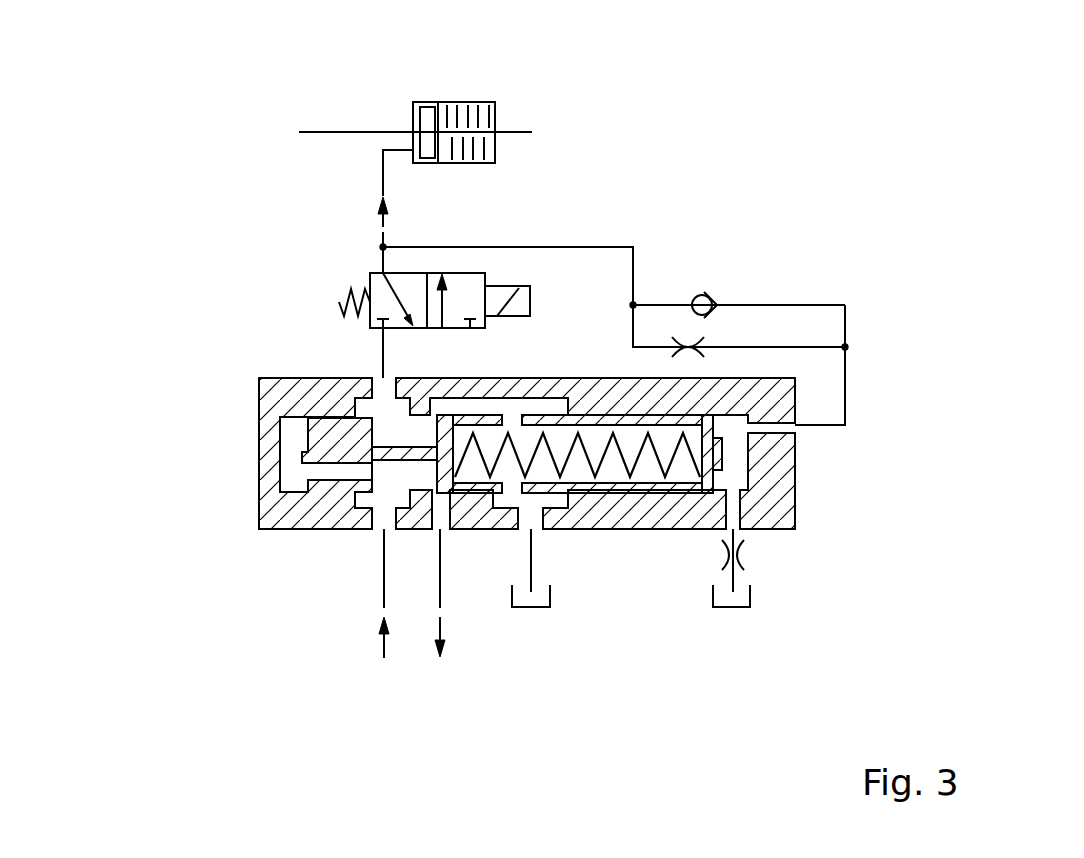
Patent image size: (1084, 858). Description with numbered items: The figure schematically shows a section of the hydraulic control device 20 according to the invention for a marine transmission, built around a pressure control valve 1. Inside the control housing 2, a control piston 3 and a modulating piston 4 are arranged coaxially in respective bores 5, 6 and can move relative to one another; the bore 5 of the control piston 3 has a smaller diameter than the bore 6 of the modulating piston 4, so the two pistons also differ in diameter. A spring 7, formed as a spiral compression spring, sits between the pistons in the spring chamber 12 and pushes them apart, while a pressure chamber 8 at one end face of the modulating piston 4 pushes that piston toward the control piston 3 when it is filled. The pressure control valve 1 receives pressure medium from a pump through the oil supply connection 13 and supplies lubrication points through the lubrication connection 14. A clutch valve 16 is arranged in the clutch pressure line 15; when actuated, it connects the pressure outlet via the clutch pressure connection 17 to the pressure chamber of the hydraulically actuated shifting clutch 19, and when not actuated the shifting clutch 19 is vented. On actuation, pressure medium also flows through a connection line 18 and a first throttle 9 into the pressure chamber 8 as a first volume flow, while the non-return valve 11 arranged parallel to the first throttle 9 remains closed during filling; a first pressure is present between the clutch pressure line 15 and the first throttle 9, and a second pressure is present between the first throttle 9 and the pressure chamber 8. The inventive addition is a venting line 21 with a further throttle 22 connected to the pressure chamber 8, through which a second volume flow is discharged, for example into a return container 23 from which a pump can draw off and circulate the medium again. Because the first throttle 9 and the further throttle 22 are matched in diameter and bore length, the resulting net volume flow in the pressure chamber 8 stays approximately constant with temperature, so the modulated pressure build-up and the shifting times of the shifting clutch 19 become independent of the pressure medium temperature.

The pressure control valve 1 is at (287, 367).
The control housing 2 is at (285, 397).
The control piston 3 is at (300, 440).
The modulating piston 4 is at (588, 488).
The bore 5 is at (293, 492).
The bore 6 is at (730, 418).
The spring 7 is at (458, 470).
The pressure chamber 8 is at (733, 477).
The first throttle 9 is at (688, 343).
The non-return valve 11 is at (705, 293).
The spring chamber 12 is at (645, 467).
The oil supply connection 13 is at (380, 650).
The lubrication connection 14 is at (440, 625).
The clutch pressure line 15 is at (385, 260).
The clutch valve 16 is at (368, 281).
The clutch pressure connection 17 is at (381, 215).
The connection line 18 is at (587, 245).
The shifting clutch 19 is at (453, 102).
The hydraulic control device 20 is at (183, 200).
The venting line 21 is at (740, 533).
The further throttle 22 is at (742, 555).
The return container 23 is at (531, 607).